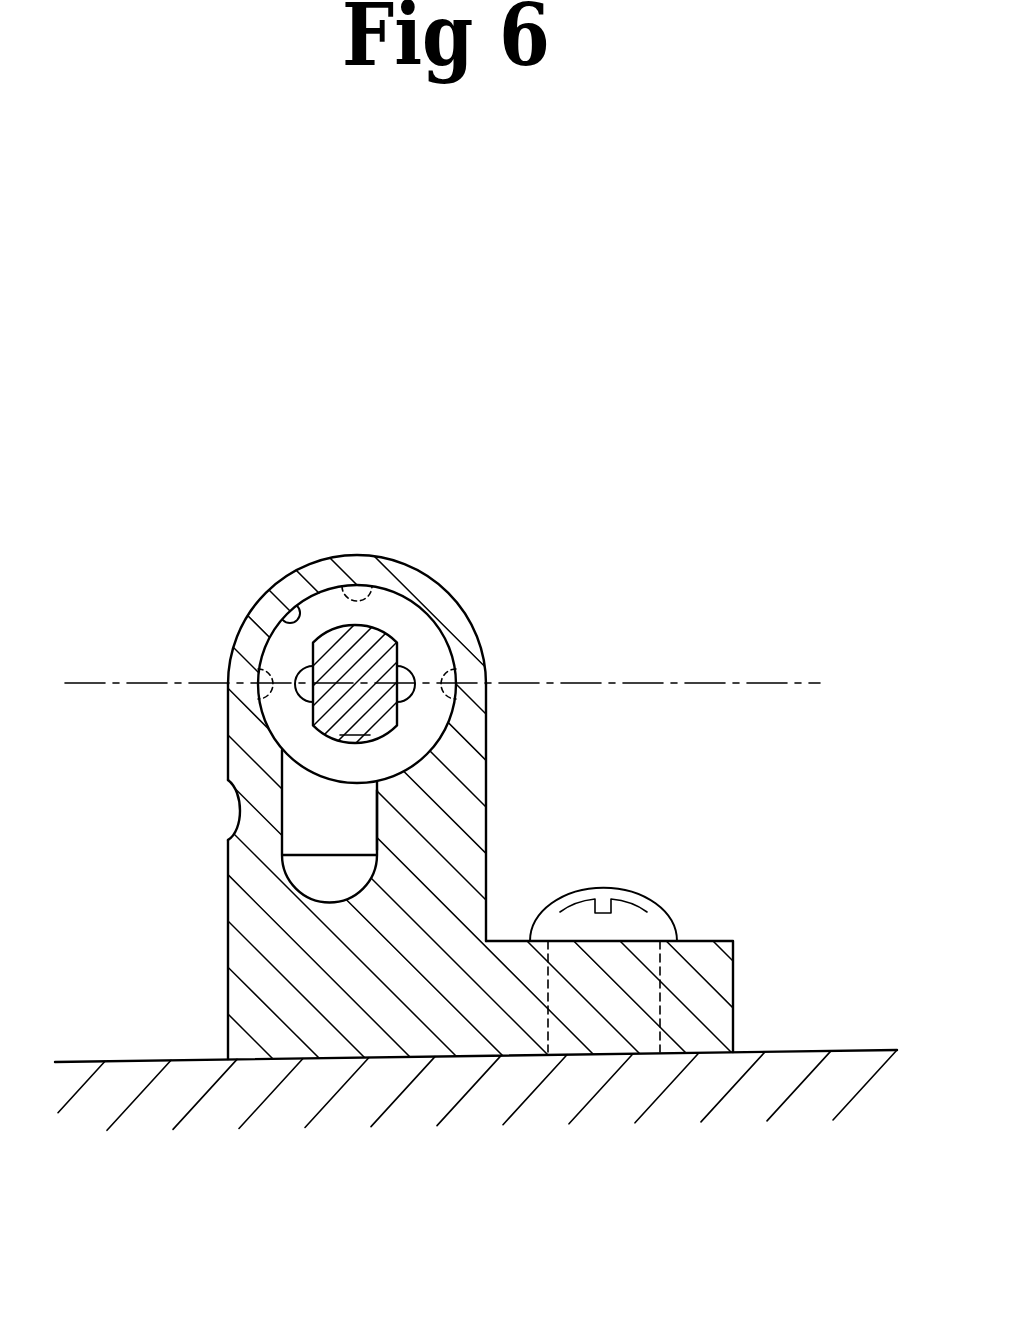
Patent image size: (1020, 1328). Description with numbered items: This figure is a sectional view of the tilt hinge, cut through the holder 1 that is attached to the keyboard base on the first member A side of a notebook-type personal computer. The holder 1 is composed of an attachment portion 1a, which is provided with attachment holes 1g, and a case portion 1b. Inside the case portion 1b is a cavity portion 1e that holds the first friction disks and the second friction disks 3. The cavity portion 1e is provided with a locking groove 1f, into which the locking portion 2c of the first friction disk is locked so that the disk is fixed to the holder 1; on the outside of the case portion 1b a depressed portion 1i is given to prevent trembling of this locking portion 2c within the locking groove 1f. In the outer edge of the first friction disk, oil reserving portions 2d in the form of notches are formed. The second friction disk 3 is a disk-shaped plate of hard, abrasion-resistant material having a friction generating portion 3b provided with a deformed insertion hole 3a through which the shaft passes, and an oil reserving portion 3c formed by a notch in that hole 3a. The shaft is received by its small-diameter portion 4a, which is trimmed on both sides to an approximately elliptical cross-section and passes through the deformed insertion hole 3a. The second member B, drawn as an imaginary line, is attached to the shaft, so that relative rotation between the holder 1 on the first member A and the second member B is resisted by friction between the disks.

The holder 1 is at (191, 949).
The attachment portion 1a is at (707, 952).
The case portion 1b is at (313, 557).
The cavity portion 1e is at (296, 604).
The locking groove 1f is at (376, 819).
The attachment hole 1g is at (550, 1023).
The depressed portion 1i is at (230, 817).
The locking portion 2c is at (298, 820).
The oil reserving portion 2d is at (357, 578).
The second friction disk 3 is at (422, 620).
The deformed insertion hole 3a is at (313, 647).
The friction generating portion 3b is at (388, 610).
The oil reserving portion 3c is at (414, 672).
The small-diameter portion 4a is at (400, 730).
The first member A is at (839, 1032).
The second member B is at (718, 650).